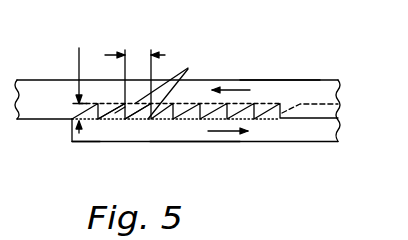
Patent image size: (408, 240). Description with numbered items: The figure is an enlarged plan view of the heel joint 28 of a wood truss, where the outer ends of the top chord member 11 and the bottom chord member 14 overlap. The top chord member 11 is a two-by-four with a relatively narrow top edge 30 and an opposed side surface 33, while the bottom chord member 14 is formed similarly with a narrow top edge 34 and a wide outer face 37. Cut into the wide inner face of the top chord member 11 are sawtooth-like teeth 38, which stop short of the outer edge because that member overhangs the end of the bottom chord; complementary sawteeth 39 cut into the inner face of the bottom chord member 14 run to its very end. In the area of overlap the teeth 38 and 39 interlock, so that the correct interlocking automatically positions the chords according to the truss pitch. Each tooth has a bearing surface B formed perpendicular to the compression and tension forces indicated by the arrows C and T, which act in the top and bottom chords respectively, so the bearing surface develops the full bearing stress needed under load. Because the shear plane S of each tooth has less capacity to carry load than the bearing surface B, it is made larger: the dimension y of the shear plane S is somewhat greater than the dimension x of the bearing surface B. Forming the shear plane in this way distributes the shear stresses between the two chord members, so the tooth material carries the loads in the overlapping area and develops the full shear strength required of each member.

The top chord member 11 is at (305, 60).
The bottom chord member 14 is at (278, 147).
The heel joint 28 is at (55, 130).
The top edge 30 is at (275, 92).
The side surface 33 is at (323, 82).
The top edge 34 is at (193, 135).
The outer face 37 is at (85, 142).
The teeth 38 is at (107, 103).
The sawteeth 39 is at (139, 118).
The bearing surface B is at (122, 110).
The shear plane S is at (167, 90).
The dimension X x is at (79, 48).
The dimension Y y is at (135, 76).
The compression force arrow C is at (238, 91).
The tension force arrow T is at (236, 132).